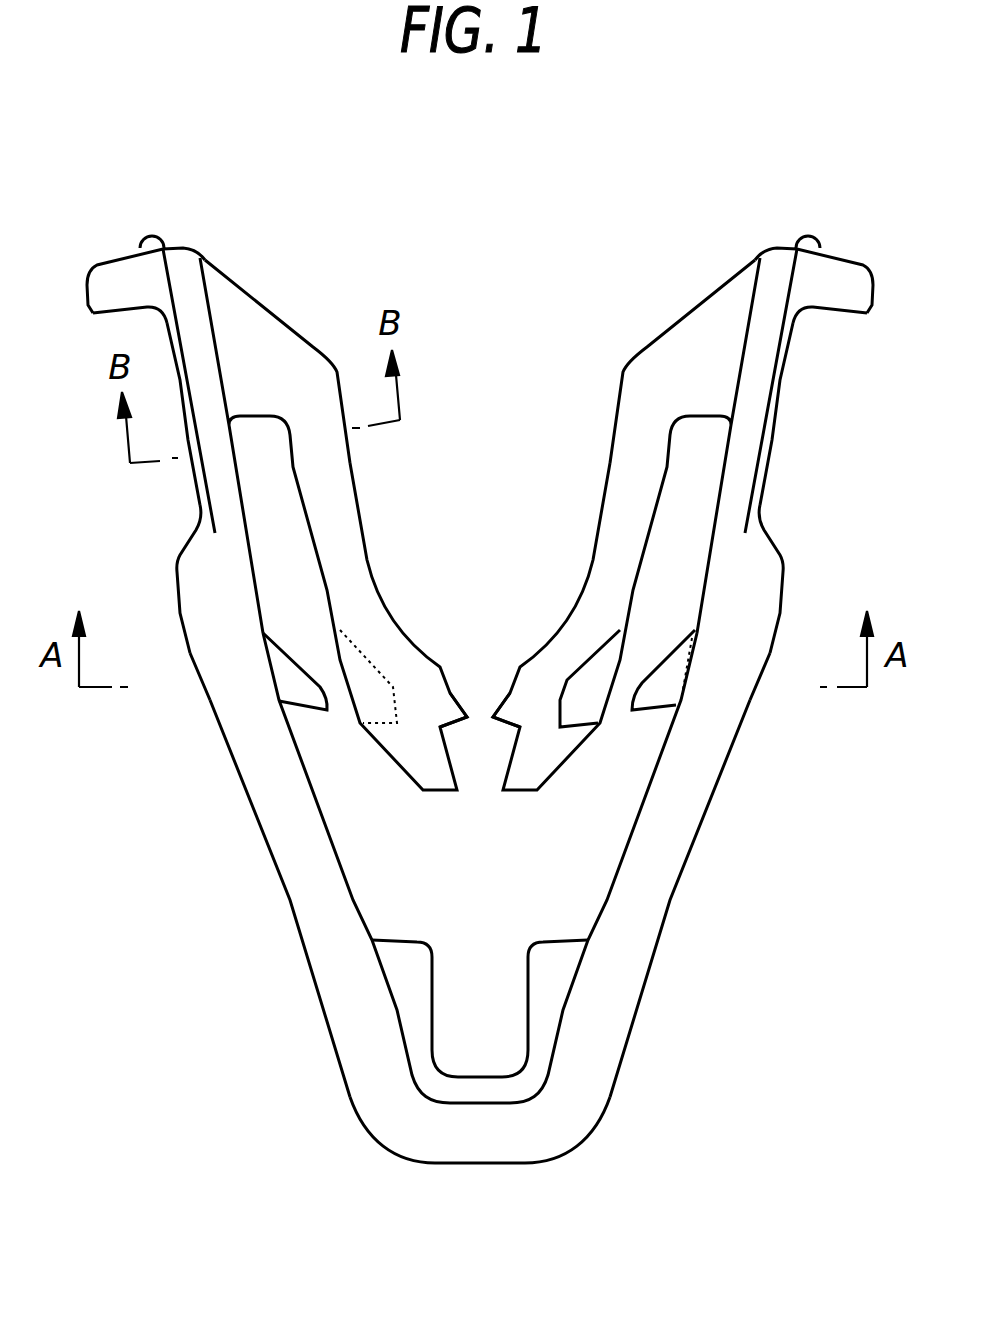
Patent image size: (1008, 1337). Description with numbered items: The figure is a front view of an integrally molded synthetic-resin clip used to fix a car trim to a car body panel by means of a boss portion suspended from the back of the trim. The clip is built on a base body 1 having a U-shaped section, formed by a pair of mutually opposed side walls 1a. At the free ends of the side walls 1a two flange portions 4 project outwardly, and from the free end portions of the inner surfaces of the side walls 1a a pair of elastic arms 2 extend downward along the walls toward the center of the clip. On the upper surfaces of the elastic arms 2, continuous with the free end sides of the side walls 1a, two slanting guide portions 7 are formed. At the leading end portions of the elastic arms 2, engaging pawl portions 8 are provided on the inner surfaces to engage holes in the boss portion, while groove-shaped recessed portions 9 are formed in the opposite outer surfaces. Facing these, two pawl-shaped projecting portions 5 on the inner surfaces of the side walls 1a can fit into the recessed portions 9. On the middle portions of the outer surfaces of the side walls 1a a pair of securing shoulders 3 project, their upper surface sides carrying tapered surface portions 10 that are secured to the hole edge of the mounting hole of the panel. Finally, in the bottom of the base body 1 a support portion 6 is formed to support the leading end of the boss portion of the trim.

The base body 1 is at (768, 908).
The side walls 1a is at (313, 967).
The elastic arms 2 is at (362, 542).
The securing shoulders 3 is at (194, 628).
The flange portions 4 is at (110, 278).
The projecting portions 5 is at (300, 690).
The support portion 6 is at (547, 953).
The slanting guide portions 7 is at (270, 307).
The engaging pawl portions 8 is at (447, 700).
The recessed portions 9 is at (380, 717).
The tapered surface portions 10 is at (182, 557).